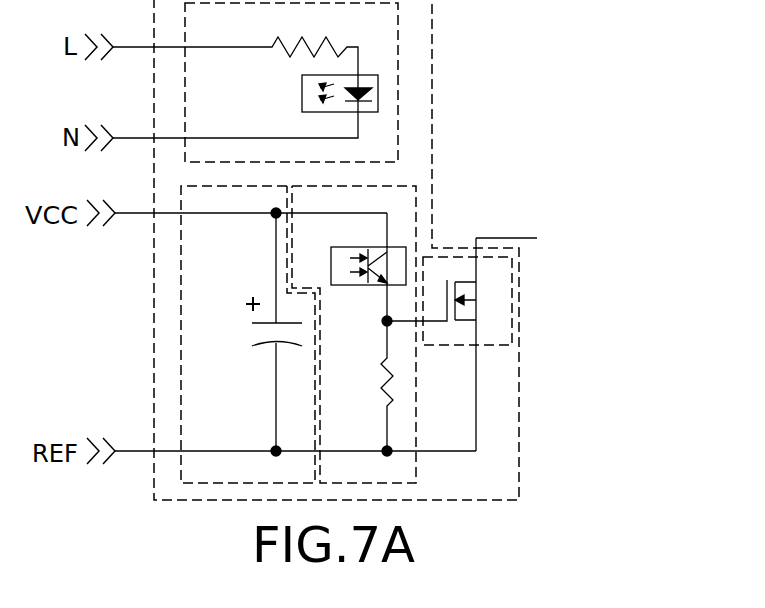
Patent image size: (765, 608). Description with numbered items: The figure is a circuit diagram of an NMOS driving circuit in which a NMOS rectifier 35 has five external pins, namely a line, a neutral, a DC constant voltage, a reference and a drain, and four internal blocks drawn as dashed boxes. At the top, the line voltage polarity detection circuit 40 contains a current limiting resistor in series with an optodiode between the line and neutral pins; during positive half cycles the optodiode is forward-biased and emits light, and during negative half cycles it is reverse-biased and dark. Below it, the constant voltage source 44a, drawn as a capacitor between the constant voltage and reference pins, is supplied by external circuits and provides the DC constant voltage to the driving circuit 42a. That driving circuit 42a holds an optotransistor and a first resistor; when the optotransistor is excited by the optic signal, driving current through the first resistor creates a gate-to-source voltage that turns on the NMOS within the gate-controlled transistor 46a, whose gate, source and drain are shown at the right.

The NMOS rectifier 35 is at (432, 172).
The line voltage polarity detection circuit 40 is at (398, 105).
The driving circuit 42a is at (417, 232).
The constant voltage source 44a is at (182, 405).
The gate-controlled transistor 46a is at (513, 333).